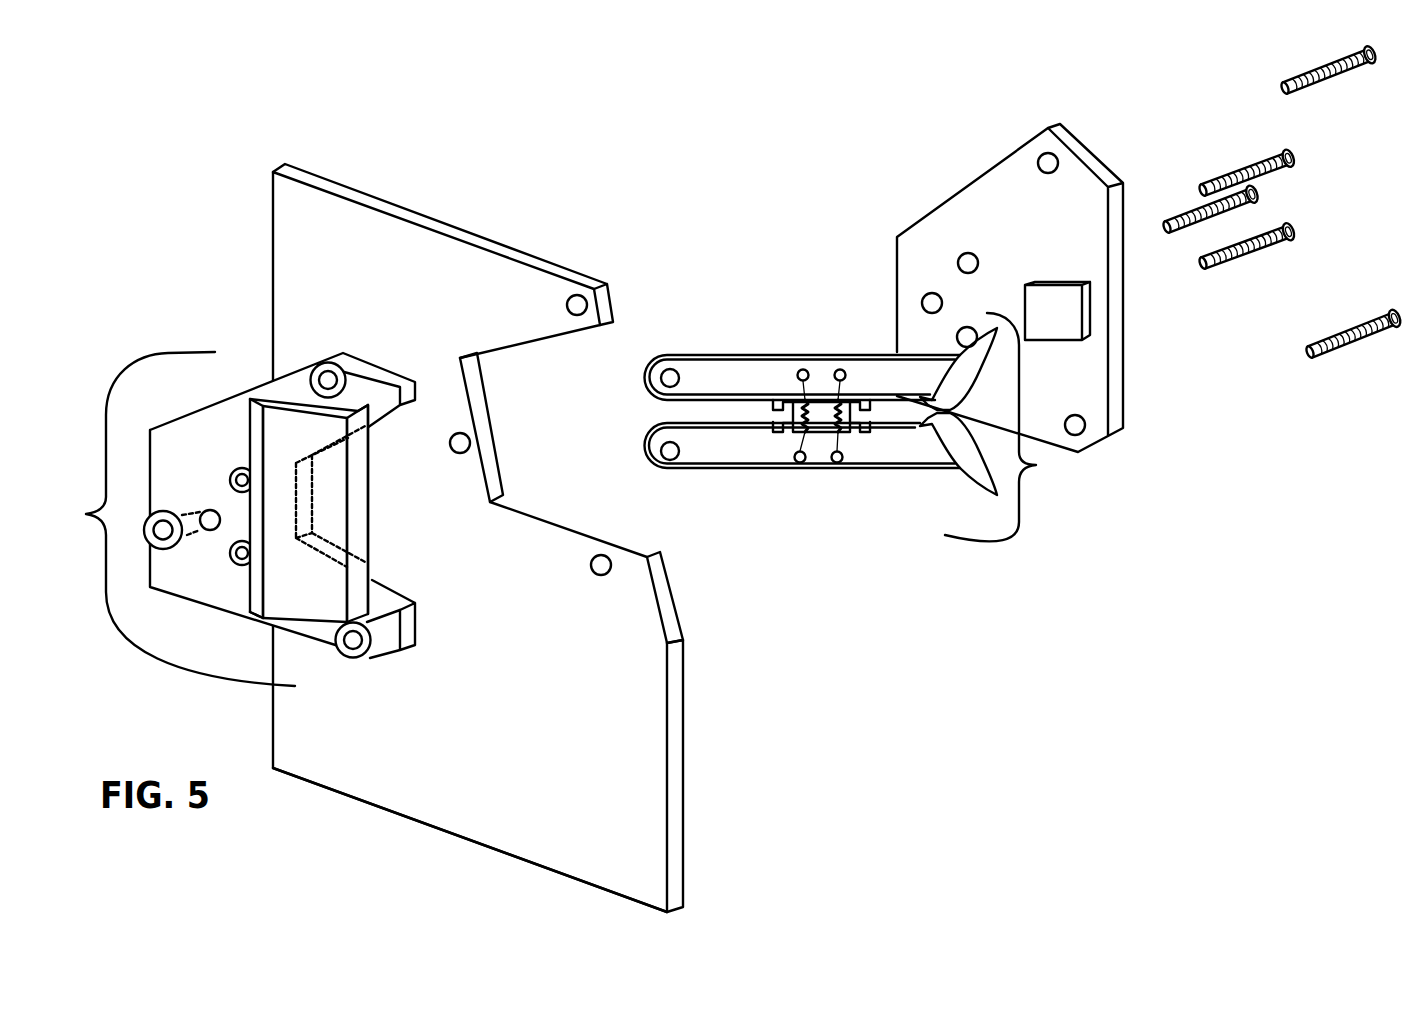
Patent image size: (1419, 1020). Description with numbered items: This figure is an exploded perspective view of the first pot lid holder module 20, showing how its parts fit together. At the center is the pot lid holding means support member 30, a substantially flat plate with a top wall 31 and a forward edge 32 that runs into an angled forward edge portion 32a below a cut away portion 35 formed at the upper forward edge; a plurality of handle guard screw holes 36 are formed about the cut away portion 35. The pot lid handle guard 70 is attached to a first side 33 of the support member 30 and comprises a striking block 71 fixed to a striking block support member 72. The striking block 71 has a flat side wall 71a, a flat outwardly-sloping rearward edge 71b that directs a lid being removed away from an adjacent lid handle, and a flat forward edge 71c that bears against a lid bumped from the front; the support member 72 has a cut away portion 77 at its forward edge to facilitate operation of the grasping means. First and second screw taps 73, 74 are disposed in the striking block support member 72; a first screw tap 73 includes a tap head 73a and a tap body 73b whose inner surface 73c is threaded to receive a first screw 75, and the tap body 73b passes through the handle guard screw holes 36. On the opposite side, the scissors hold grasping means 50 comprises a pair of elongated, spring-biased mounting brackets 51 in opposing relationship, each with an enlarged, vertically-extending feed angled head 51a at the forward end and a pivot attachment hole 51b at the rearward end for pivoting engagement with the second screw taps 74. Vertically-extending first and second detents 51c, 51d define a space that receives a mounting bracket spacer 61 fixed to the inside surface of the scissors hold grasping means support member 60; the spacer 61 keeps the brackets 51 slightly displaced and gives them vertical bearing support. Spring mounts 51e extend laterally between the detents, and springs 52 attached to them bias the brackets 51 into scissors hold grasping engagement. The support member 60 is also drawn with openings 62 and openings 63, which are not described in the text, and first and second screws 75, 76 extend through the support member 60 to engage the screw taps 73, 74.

The first pot lid holder module 20 is at (609, 232).
The pot lid holding means support member 30 is at (295, 265).
The top wall 31 is at (481, 239).
The forward edge 32 is at (676, 773).
The angled forward edge portion 32a is at (674, 608).
The first side 33 is at (536, 785).
The cut away portion 35 is at (519, 433).
The handle guard screw holes 36 is at (566, 304).
The scissors hold grasping means 50 is at (1005, 427).
The mounting brackets 51 is at (710, 375).
The feed angled head 51a is at (955, 370).
The pivot attachment hole 51b is at (669, 369).
The first detent 51c is at (862, 404).
The second detent 51d is at (773, 404).
The spring mounts 51e is at (839, 369).
The springs 52 is at (805, 430).
The scissors hold grasping means support member 60 is at (1016, 137).
The mounting bracket spacer 61 is at (1068, 315).
The mounting holes 62 is at (1043, 172).
The pivot holes 63 is at (969, 253).
The pot lid handle guard 70 is at (176, 519).
The striking block 71 is at (300, 526).
The flat side wall 71a is at (272, 597).
The rearward edge 71b is at (255, 596).
The forward edge 71c is at (363, 463).
The striking block support member 72 is at (300, 366).
The first screw tap 73 is at (331, 378).
The tap head 73a is at (151, 513).
The tap body 73b is at (193, 512).
The inner surface 73c is at (201, 534).
The second screw tap 74 is at (237, 465).
The first screw 75 is at (1272, 82).
The second screw 76 is at (1306, 147).
The cut away portion 77 is at (328, 508).